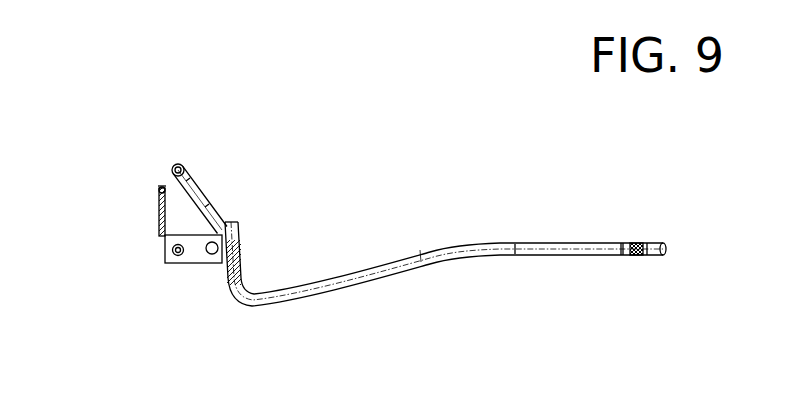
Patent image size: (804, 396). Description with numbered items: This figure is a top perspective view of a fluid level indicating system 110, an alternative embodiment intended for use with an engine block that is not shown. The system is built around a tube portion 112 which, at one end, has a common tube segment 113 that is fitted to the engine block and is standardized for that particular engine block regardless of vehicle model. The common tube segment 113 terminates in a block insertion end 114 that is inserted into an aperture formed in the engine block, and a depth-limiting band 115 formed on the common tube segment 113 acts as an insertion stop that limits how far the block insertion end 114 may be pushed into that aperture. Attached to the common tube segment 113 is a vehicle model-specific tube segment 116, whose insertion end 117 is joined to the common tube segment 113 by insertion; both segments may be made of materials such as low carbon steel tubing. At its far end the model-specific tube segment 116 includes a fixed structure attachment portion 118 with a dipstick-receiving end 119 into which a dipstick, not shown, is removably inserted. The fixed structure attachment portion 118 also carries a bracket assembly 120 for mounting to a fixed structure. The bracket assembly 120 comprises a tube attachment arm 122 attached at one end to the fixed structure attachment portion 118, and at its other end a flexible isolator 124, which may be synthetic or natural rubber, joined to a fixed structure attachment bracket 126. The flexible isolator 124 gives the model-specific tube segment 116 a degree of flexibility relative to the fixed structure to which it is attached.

The fluid level indicating system 110 is at (360, 140).
The tube portion 112 is at (317, 285).
The common tube segment 113 is at (647, 255).
The block insertion end 114 is at (657, 247).
The depth-limiting band 115 is at (620, 247).
The vehicle model-specific tube segment 116 is at (415, 247).
The insertion end 117 is at (613, 252).
The fixed structure attachment portion 118 is at (222, 214).
The dipstick-receiving end 119 is at (185, 173).
The bracket assembly 120 is at (170, 261).
The tube attachment arm 122 is at (193, 253).
The flexible isolator 124 is at (155, 236).
The fixed structure attachment bracket 126 is at (155, 194).